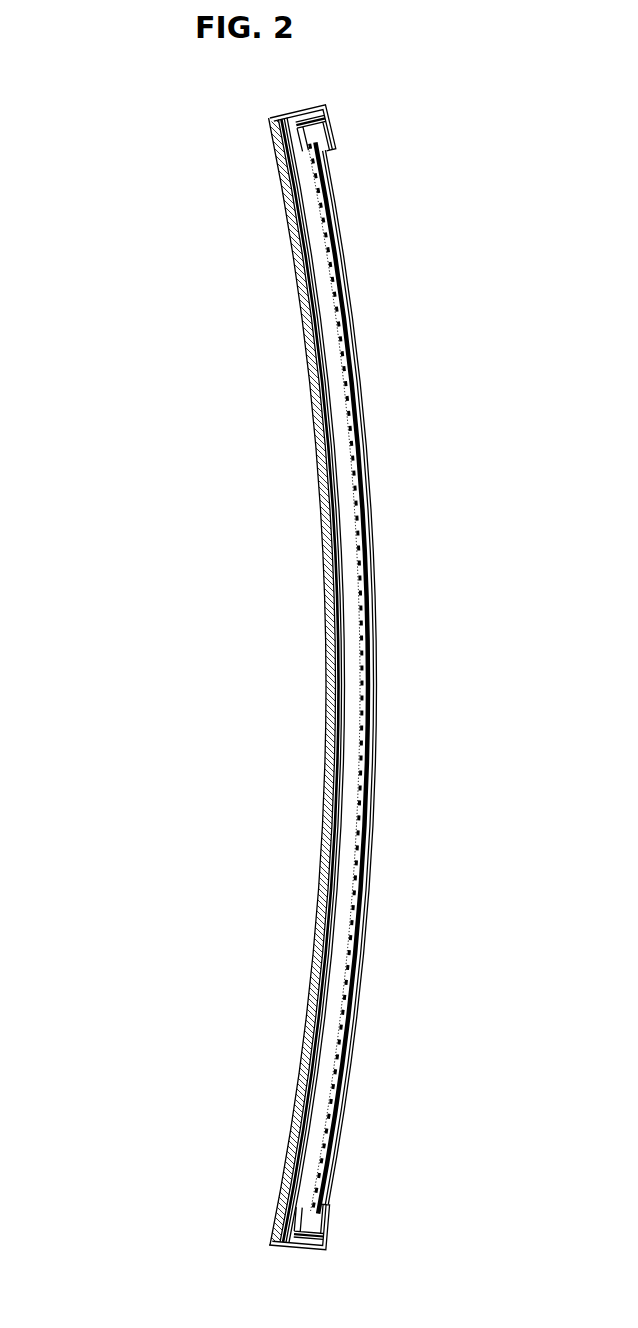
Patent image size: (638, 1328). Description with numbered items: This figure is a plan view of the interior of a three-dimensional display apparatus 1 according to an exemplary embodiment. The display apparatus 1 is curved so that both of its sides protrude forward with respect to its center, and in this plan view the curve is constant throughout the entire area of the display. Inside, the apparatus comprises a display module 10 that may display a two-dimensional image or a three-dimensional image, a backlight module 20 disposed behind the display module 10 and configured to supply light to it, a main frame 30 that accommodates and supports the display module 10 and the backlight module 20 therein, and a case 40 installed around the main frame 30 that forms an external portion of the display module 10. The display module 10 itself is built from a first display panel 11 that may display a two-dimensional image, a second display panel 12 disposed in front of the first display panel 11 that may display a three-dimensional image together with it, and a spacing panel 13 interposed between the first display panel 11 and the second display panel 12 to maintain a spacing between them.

The 3D display apparatus 1 is at (62, 113).
The display module 10 is at (246, 650).
The first display panel 11 is at (330, 658).
The second display panel 12 is at (330, 767).
The spacing panel 13 is at (332, 712).
The backlight module 20 is at (378, 780).
The main frame 30 is at (366, 705).
The case 40 is at (330, 846).